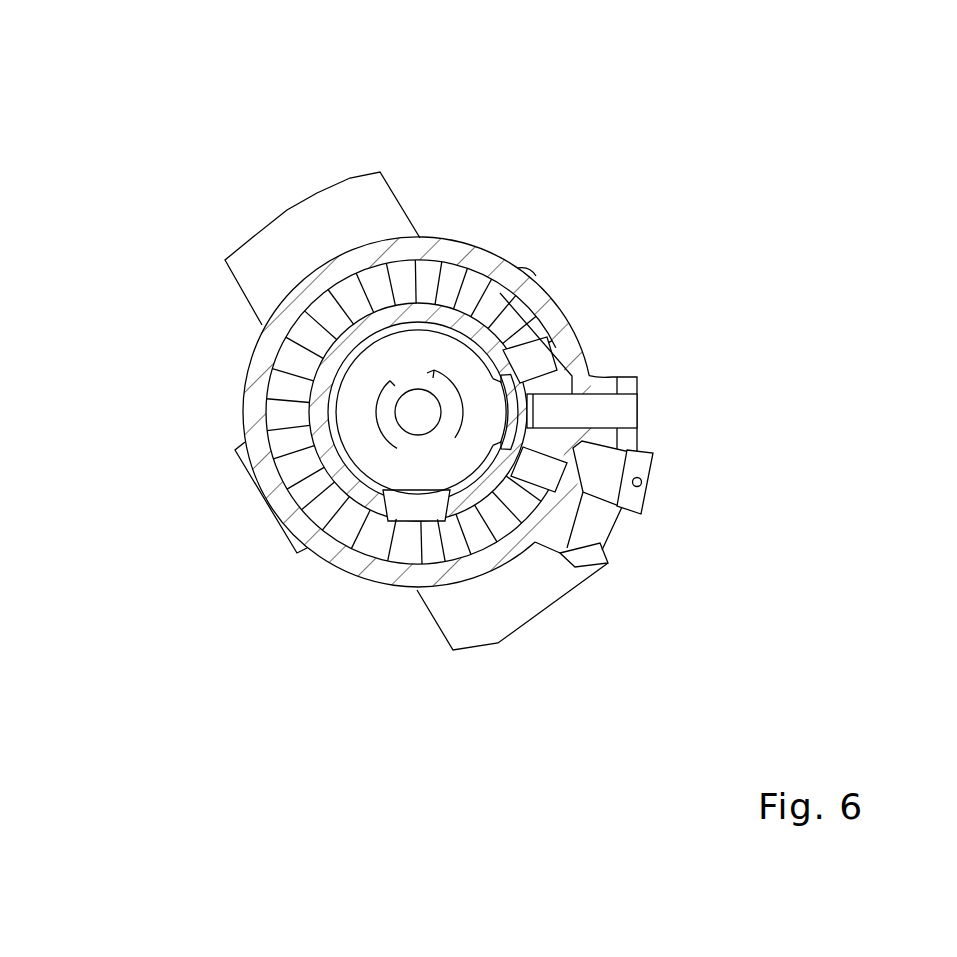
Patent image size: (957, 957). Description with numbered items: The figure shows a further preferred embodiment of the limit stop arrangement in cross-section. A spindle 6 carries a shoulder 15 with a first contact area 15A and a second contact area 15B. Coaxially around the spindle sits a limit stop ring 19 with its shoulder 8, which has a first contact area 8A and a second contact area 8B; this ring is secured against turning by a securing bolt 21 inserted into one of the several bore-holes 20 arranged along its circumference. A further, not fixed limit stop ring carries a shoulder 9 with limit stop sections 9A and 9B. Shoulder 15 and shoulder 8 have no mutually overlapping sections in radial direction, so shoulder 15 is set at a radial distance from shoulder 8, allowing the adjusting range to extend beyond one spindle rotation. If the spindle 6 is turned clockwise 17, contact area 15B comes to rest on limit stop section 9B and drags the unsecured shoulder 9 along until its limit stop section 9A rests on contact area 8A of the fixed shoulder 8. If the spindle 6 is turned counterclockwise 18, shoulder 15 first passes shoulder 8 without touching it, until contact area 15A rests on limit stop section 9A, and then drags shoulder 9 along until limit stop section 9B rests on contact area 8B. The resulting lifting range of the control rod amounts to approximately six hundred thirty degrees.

The spindle 6 is at (348, 302).
The shoulder 8 is at (472, 327).
The first contact area 8A is at (425, 305).
The second contact area 8B is at (531, 386).
The shoulder 9 is at (407, 503).
The limit stop section 9A is at (330, 505).
The limit stop section 9B is at (522, 555).
The shoulder 15 is at (510, 430).
The first contact area 15A is at (527, 270).
The second contact area 15B is at (600, 535).
The clockwise rotation direction 17 is at (370, 407).
The counterclockwise rotation direction 18 is at (505, 382).
The limit stop ring 19 is at (488, 290).
The bore-hole 20 is at (543, 350).
The securing bolt 21 is at (617, 410).